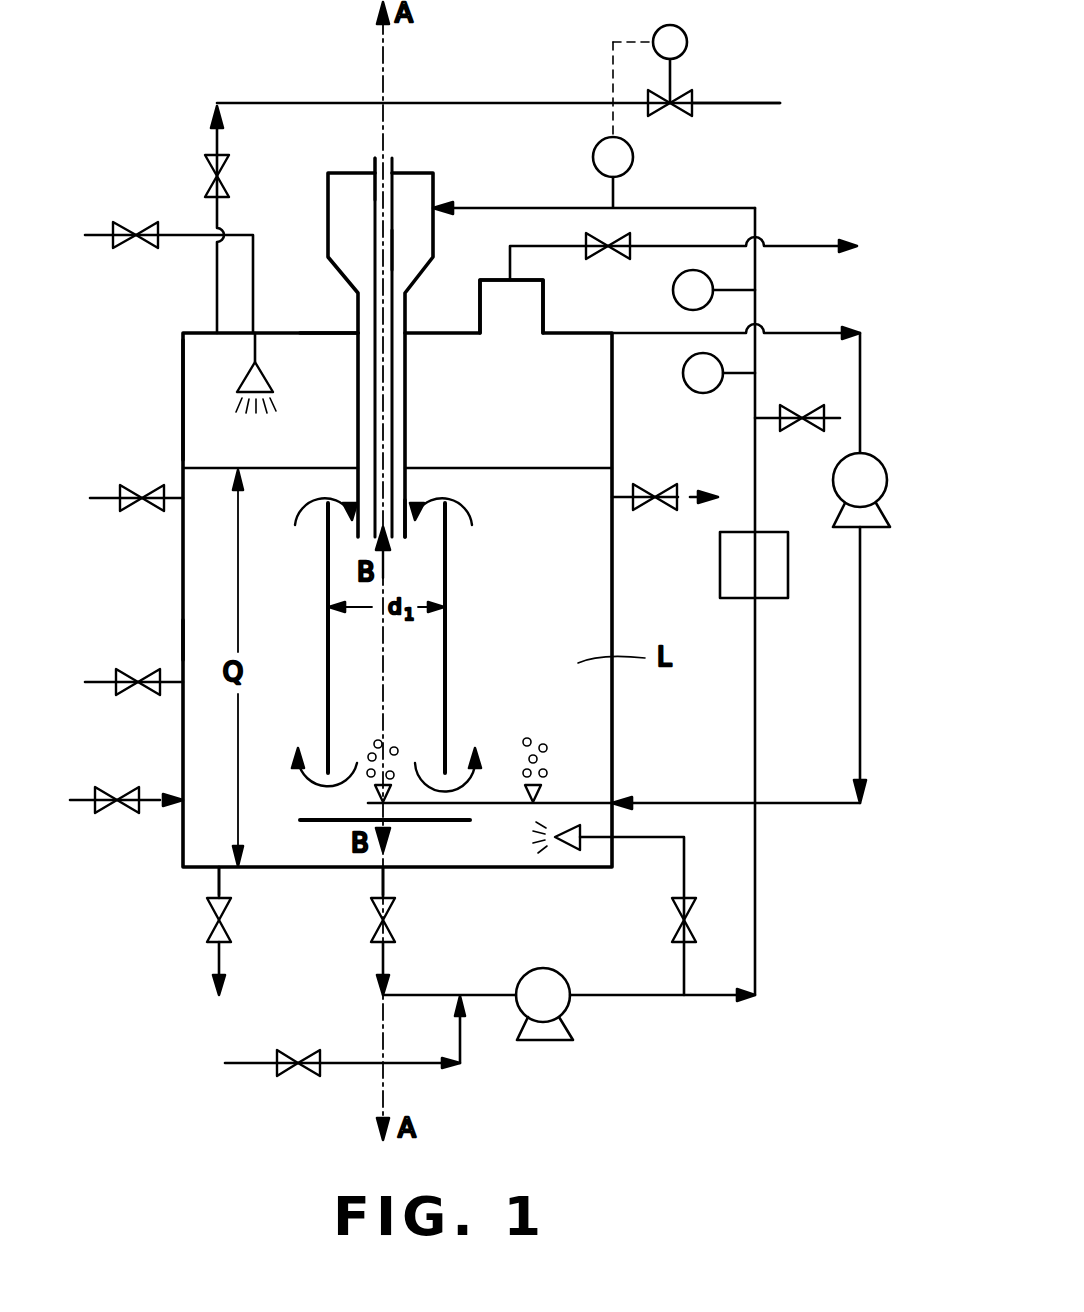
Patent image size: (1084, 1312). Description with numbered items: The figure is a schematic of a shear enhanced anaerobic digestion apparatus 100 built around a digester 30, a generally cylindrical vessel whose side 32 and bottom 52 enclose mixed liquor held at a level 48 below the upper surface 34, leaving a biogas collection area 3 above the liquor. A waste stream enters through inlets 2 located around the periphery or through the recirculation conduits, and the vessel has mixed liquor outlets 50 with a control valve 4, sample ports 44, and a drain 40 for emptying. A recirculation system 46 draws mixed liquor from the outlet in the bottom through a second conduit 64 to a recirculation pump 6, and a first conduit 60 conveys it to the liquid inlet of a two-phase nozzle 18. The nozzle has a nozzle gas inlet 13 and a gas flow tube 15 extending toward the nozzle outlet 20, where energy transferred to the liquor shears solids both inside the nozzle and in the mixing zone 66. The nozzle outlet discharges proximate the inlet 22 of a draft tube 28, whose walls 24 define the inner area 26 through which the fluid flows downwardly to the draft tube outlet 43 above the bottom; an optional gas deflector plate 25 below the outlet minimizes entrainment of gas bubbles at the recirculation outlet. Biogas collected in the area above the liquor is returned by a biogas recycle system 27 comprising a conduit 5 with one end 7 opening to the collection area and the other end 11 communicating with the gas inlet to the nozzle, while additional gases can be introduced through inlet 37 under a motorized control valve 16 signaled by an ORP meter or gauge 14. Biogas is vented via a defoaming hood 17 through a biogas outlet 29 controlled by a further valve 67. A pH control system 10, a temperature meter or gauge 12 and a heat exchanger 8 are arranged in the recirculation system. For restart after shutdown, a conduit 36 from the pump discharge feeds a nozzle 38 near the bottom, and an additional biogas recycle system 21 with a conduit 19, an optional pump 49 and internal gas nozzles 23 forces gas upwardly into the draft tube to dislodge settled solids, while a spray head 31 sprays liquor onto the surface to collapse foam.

The shear enhanced anaerobic digestion apparatus 100 is at (203, 62).
The biogas recycle system 27 is at (284, 96).
The conduit 5 is at (214, 148).
The nozzle gas inlet 13 is at (374, 158).
The other end of the conduit 11 is at (390, 131).
The two-phase nozzle 18 is at (327, 214).
The gas flow tube 15 is at (380, 244).
The upper surface of the digester 34 is at (313, 331).
The one end of the conduit 7 is at (216, 331).
The spray head 31 is at (262, 370).
The area above the liquor 3 is at (215, 437).
The side of the digester vessel 32 is at (183, 596).
The digester 30 is at (183, 641).
The sample ports 44 is at (100, 500).
The control valve 4 is at (140, 694).
The inlet 2 is at (178, 810).
The draft tube inlet 22 is at (356, 531).
The draft tube 28 is at (318, 575).
The nozzle outlet 20 is at (398, 534).
The mixing zone 66 is at (410, 531).
The baffle plate 24 is at (327, 668).
The inner area 26 is at (410, 631).
The internal gas nozzles 23 is at (392, 783).
The draft tube outlet 43 is at (450, 780).
The level of the mixed liquor 48 is at (495, 466).
The conduit 19 is at (665, 805).
The additional biogas recycle system 21 is at (872, 760).
The nozzle 38 is at (569, 830).
The gas deflector plate 25 is at (424, 822).
The conduit 36 is at (685, 861).
The bottom of the digester 52 is at (273, 869).
The mixed liquor outlet 50 is at (390, 869).
The drain 40 is at (214, 984).
The second conduit 64 is at (412, 993).
The recirculation pump 6 is at (546, 980).
The first conduit 60 is at (703, 995).
The recirculation system 46 is at (784, 960).
The temperature meter or gauge 12 is at (683, 374).
The heat exchanger 8 is at (764, 548).
The pump 49 is at (862, 470).
The biogas outlet 29 is at (862, 242).
The inlet 37 is at (780, 103).
The motorized control valve 16 is at (673, 99).
The ORP meter or gauge 14 is at (633, 150).
The further valve 67 is at (607, 244).
The pH control system 10 is at (673, 290).
The defoaming hood 17 is at (545, 299).